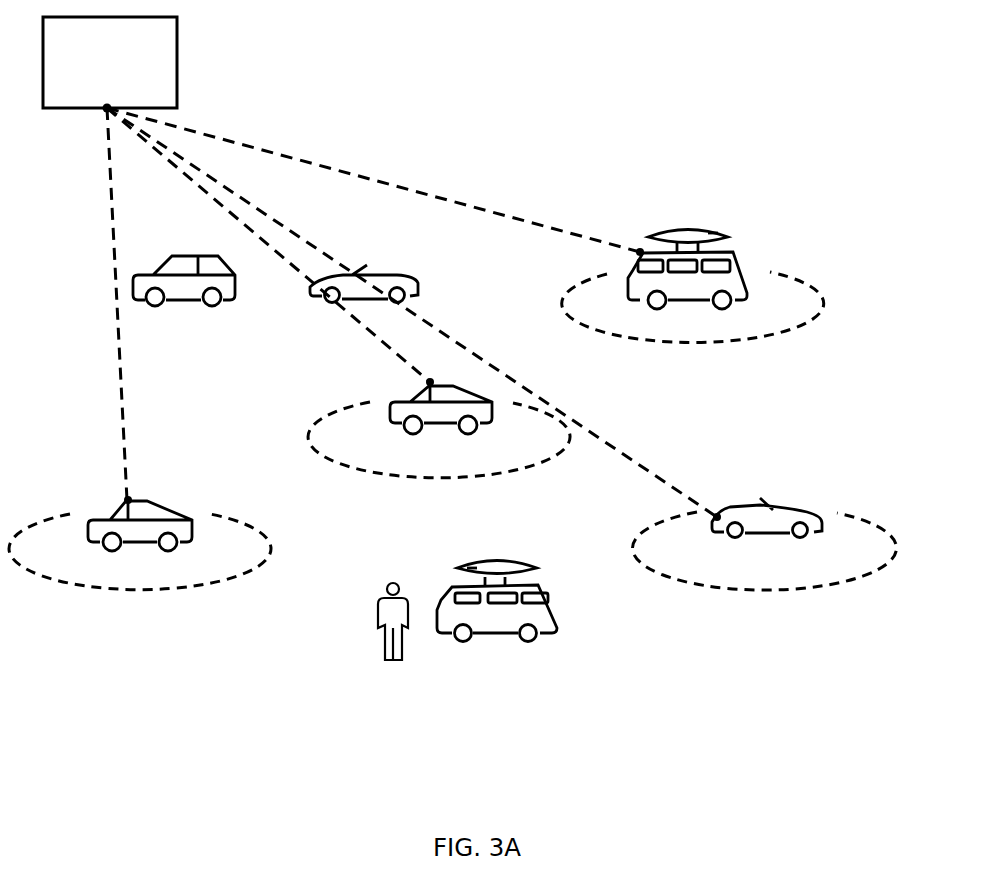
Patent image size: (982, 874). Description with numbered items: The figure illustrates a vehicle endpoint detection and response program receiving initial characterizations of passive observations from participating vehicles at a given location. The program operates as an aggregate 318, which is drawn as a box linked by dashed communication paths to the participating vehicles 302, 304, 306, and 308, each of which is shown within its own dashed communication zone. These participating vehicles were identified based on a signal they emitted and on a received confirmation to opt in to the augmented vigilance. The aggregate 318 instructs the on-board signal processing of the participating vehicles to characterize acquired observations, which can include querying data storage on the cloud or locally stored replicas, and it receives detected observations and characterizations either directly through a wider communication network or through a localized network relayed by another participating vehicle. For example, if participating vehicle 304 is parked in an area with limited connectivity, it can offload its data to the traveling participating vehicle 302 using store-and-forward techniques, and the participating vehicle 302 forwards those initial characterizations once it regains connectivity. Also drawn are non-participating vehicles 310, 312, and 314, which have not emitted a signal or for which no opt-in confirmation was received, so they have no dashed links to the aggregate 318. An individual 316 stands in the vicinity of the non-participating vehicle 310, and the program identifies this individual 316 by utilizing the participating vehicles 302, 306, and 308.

The participating vehicle 302 is at (307, 435).
The participating vehicle 304 is at (793, 282).
The participating vehicle 306 is at (263, 558).
The participating vehicle 308 is at (867, 520).
The non-participating vehicle 310 is at (555, 613).
The non-participating vehicle 312 is at (178, 300).
The non-participating vehicle 314 is at (377, 273).
The individual 316 is at (378, 610).
The aggregate 318 is at (85, 78).